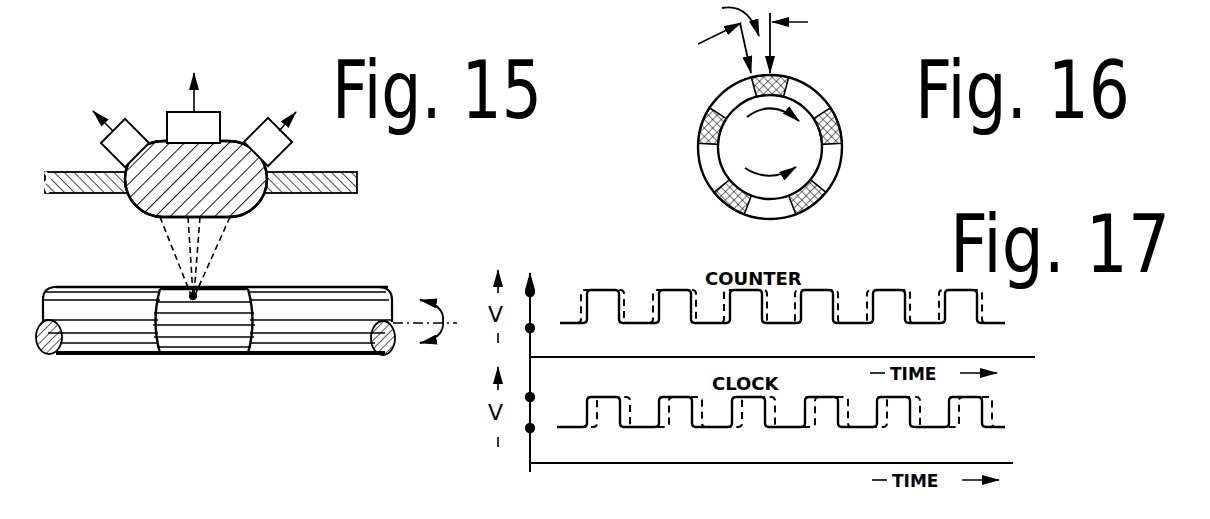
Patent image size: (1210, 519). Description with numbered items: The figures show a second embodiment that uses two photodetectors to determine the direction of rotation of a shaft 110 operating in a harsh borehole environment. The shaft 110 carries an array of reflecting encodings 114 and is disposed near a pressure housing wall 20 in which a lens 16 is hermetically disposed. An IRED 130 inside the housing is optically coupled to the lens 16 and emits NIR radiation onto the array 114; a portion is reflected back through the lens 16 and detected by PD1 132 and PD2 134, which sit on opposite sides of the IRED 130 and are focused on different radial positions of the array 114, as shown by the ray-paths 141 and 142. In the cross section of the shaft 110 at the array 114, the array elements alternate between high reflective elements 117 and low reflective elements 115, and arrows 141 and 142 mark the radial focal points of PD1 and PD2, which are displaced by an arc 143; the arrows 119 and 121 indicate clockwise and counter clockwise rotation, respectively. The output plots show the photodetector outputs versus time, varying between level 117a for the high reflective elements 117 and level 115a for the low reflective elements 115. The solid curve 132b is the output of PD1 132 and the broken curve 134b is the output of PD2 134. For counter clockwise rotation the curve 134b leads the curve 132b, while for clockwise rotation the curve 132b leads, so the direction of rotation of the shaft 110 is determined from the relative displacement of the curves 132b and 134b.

In FIG. 15, the lens 16 is at (236, 200).
In FIG. 15, the pressure housing wall 20 is at (320, 193).
In FIG. 15, the shaft 110 is at (103, 358).
In FIG. 16, the shaft 110 is at (700, 98).
In FIG. 15, the array of reflecting encodings 114 is at (214, 378).
In FIG. 16, the low reflective elements 115 is at (783, 77).
In FIG. 16, the high reflective elements 117 is at (730, 85).
In FIG. 16, the clockwise rotation arrow 119 is at (766, 114).
In FIG. 16, the counter clockwise rotation arrow 121 is at (753, 163).
In FIG. 15, the IRED 130 is at (216, 111).
In FIG. 15, the PD1 132 is at (289, 150).
In FIG. 15, the PD2 134 is at (110, 150).
In FIG. 15, the ray-path of PD1 141 is at (216, 251).
In FIG. 16, the ray-path of PD1 141 is at (745, 42).
In FIG. 15, the ray-path of PD2 142 is at (172, 257).
In FIG. 16, the ray-path of PD2 142 is at (772, 43).
In FIG. 16, the arc 143 is at (716, 25).
In FIG. 17, the low reflective element output level 115a is at (530, 328).
In FIG. 17, the high reflective element output level 117a is at (530, 292).
In FIG. 17, the solid curve 132b is at (995, 322).
In FIG. 17, the broken curve 134b is at (577, 313).